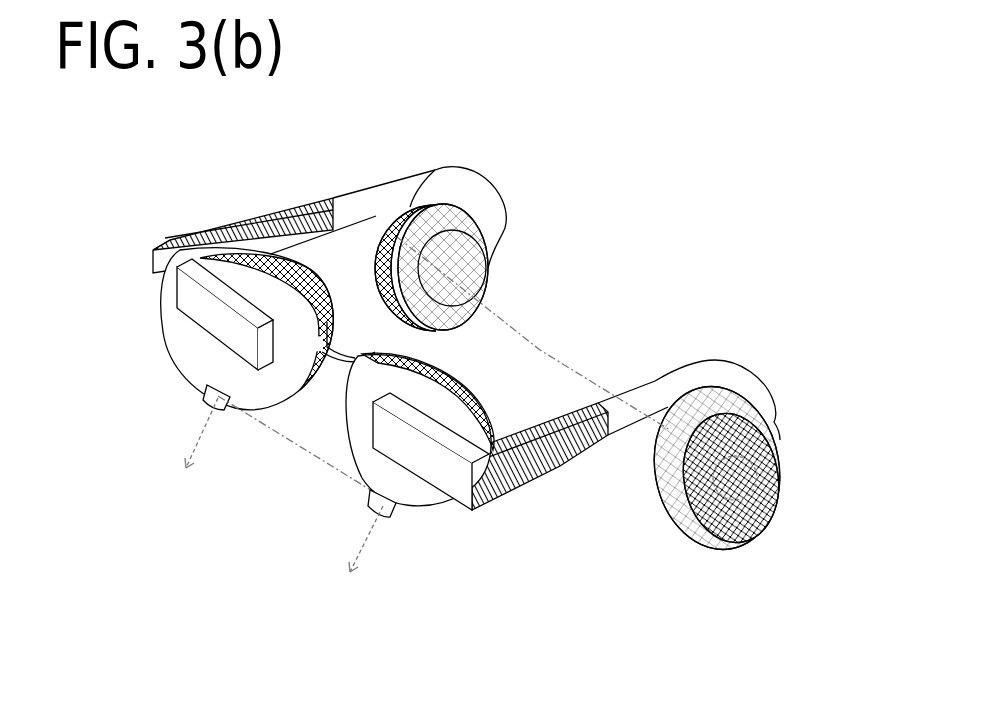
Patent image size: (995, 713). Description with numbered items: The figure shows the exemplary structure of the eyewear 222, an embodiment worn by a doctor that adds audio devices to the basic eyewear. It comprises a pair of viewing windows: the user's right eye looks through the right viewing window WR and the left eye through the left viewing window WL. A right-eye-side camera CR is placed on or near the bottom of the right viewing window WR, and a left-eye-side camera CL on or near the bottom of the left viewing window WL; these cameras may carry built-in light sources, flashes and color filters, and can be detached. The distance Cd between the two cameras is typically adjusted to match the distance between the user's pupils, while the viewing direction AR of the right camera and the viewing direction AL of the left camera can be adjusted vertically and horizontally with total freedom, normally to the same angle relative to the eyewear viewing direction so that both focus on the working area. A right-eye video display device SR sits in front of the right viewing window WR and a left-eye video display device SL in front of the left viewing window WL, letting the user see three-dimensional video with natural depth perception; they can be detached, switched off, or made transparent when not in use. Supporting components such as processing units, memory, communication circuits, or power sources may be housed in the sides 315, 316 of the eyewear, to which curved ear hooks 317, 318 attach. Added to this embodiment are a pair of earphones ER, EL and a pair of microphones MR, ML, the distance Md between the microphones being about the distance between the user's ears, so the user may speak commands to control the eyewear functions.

The eyewear 222 is at (332, 200).
The side of the eyewear 316 is at (253, 232).
The right ear hook arch 318 is at (480, 200).
The right microphone MR is at (403, 235).
The right earphone ER is at (467, 263).
The right viewing window WR is at (185, 317).
The right-eye video display device SR is at (220, 315).
The right-eye-side camera CR is at (210, 387).
The viewing direction of the right-eye-side camera AR is at (189, 455).
The distance between two cameras Cd is at (300, 446).
The side of the eyewear 315 is at (533, 463).
The left ear hook arch 317 is at (747, 385).
The left earphone EL is at (690, 533).
The left microphone ML is at (768, 523).
The distance between two microphones Md is at (533, 333).
The left viewing window WL is at (444, 500).
The left-eye video display device SL is at (405, 440).
The left-eye-side camera CL is at (377, 505).
The viewing direction of the left-eye-side camera AL is at (354, 559).